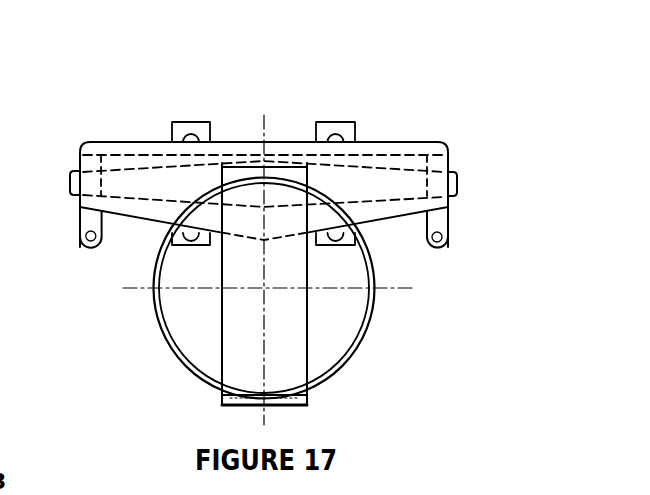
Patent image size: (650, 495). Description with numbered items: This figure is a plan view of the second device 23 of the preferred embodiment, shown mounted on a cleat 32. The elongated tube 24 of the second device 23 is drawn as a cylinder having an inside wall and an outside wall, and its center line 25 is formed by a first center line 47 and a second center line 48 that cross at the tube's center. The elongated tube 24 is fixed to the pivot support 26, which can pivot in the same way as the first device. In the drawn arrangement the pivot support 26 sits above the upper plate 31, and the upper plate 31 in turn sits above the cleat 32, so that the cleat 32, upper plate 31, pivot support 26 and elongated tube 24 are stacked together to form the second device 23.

The second device 23 is at (155, 317).
The elongated tube 24 is at (357, 347).
The center line 25 is at (264, 289).
The pivot support 26 is at (222, 403).
The upper plate 31 is at (140, 213).
The cleat 32 is at (77, 173).
The first center line 47 is at (265, 343).
The second center line 48 is at (397, 288).